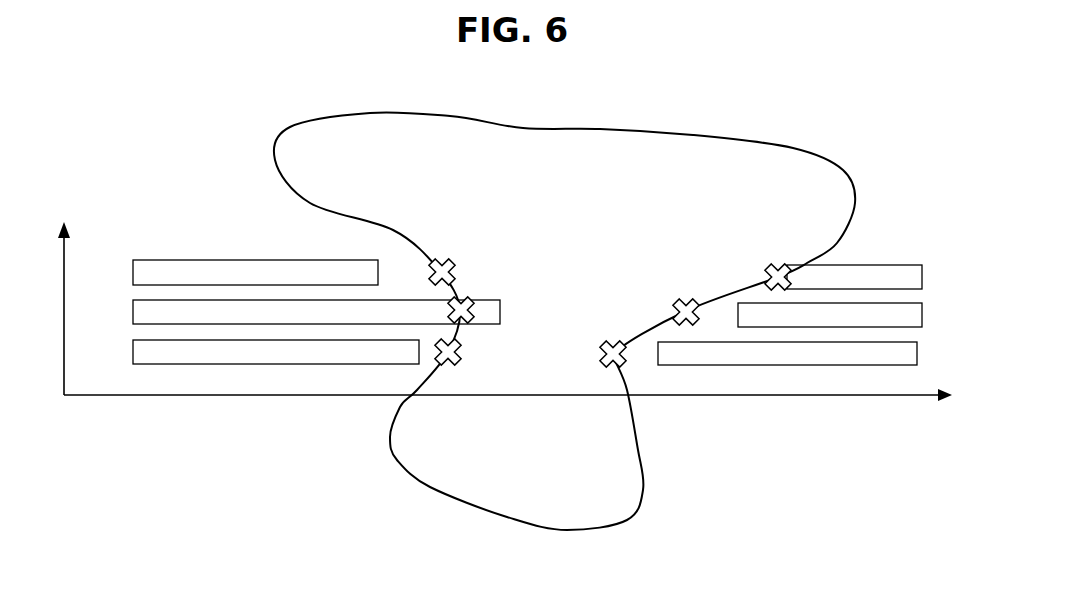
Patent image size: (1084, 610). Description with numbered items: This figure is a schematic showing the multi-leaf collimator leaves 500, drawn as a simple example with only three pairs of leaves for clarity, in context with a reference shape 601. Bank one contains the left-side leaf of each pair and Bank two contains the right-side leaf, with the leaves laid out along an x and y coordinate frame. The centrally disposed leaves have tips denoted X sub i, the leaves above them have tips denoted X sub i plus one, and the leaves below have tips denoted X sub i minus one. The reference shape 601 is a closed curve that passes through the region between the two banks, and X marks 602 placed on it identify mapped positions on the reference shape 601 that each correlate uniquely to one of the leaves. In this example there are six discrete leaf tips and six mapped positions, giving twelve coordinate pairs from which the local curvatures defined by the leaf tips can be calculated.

The multi-leaf collimator leaves 500 is at (273, 435).
The reference shape 601 is at (573, 130).
The X marks 602 is at (678, 299).